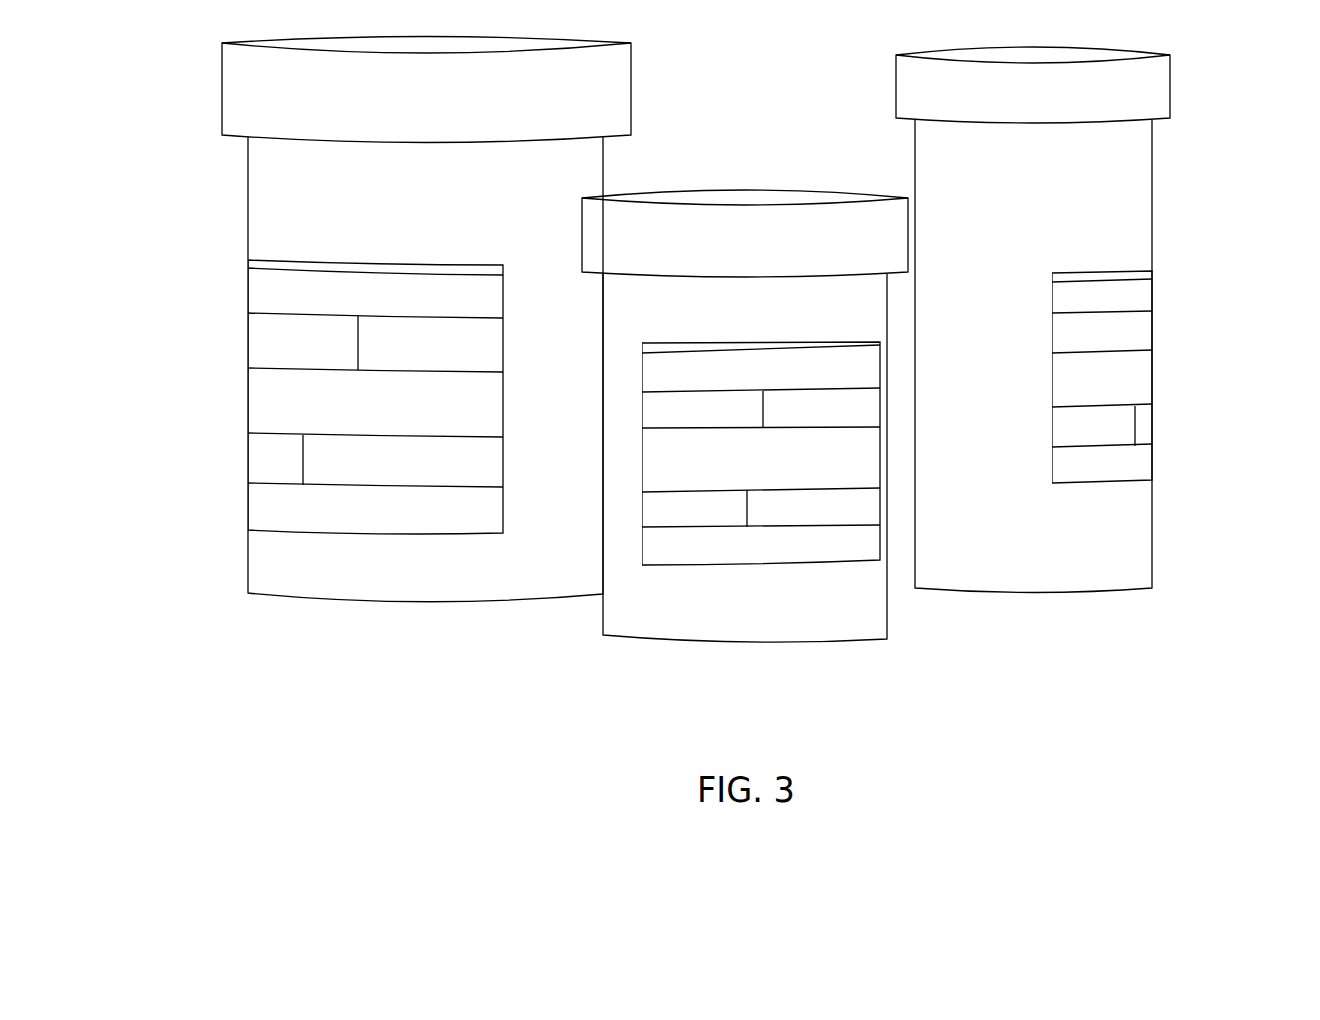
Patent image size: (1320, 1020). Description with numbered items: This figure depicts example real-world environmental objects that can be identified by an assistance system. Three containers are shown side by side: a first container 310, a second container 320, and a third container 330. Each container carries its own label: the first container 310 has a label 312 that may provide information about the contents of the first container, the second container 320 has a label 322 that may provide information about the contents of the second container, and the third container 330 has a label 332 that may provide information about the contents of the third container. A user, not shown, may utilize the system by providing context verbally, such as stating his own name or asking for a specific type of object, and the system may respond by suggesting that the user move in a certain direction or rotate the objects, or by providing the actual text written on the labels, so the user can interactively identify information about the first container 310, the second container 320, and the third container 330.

The first container 310 is at (391, 319).
The label 312 is at (256, 270).
The second container 320 is at (770, 379).
The label 322 is at (877, 565).
The third container 330 is at (1079, 320).
The label 332 is at (1153, 430).